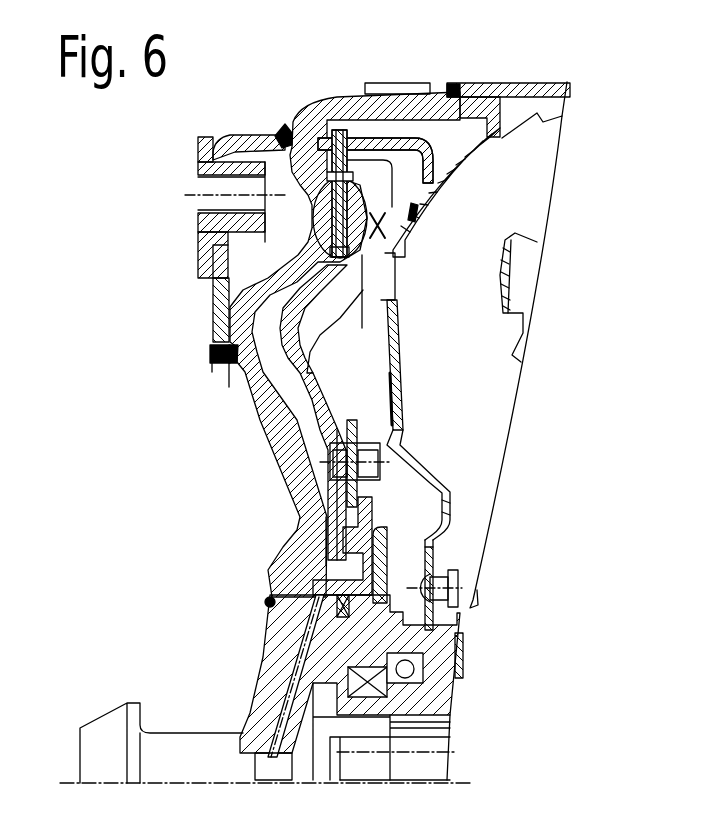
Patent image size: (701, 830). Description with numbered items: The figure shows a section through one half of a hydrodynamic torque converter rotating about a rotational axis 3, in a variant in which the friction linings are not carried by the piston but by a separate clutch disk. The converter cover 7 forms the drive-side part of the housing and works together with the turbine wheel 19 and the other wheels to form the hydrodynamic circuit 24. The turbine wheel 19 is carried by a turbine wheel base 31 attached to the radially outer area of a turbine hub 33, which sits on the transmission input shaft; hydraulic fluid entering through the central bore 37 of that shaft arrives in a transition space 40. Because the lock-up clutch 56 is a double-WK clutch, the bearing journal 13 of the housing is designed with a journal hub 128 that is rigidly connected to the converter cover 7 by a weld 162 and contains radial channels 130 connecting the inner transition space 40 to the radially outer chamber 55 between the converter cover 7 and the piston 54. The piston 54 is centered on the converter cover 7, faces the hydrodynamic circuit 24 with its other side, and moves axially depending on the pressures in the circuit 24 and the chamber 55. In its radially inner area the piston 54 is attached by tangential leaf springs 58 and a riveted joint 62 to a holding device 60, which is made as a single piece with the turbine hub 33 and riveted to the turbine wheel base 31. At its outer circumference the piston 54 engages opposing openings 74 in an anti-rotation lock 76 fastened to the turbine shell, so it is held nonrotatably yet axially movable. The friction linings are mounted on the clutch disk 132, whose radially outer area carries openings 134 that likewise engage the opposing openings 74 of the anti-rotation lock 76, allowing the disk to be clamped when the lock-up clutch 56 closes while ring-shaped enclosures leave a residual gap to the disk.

The rotational axis 3 is at (75, 783).
The converter cover 7 is at (297, 483).
The bearing journal 13 is at (187, 773).
The turbine wheel 19 is at (524, 190).
The hydrodynamic circuit 24 is at (356, 362).
The turbine wheel base 31 is at (450, 530).
The turbine hub 33 is at (440, 676).
The central bore 37 is at (423, 763).
The transition space 40 is at (276, 768).
The piston 54 is at (297, 345).
The chamber 55 is at (300, 405).
The lock-up clutch 56 is at (297, 292).
The tangential leaf springs 58 is at (352, 432).
The holding device 60 is at (370, 523).
The riveted joint 62 is at (370, 480).
The opposing openings 74 is at (289, 126).
The anti-rotation lock 76 is at (420, 112).
The journal hub 128 is at (298, 632).
The radial channels 130 is at (290, 672).
The clutch disk 132 is at (332, 130).
The openings 134 is at (336, 137).
The weld 162 is at (270, 600).